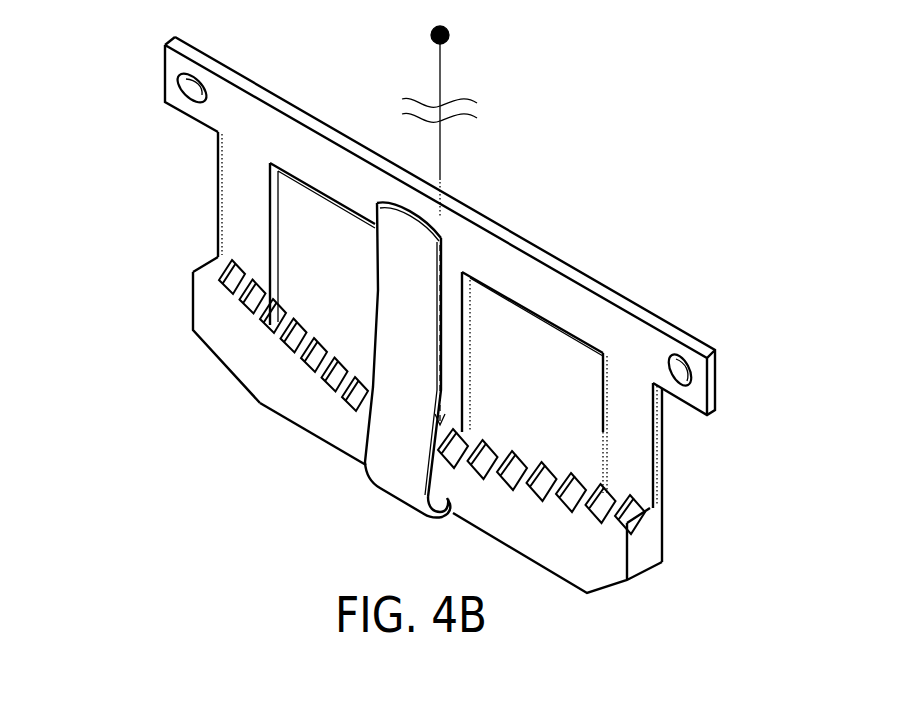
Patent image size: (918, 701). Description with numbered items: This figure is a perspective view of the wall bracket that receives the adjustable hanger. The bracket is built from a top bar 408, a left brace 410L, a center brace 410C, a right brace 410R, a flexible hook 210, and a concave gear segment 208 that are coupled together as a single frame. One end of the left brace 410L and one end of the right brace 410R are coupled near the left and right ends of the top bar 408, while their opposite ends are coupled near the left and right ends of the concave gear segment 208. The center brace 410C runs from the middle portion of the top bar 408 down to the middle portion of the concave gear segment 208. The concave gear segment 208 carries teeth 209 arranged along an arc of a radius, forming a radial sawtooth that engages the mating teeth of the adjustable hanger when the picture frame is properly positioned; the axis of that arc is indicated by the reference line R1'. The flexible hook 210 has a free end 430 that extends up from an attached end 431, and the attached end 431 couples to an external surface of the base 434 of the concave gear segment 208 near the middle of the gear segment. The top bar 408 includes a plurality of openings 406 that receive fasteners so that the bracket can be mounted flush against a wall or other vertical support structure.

The concave gear segment 208 is at (600, 588).
The teeth 209 is at (316, 347).
The flexible hook 210 is at (400, 478).
The openings 406 is at (178, 80).
The top bar 408 is at (558, 293).
The left brace 410L is at (235, 220).
The center brace 410C is at (470, 403).
The right brace 410R is at (658, 452).
The free end 430 is at (432, 222).
The attached end 431 is at (435, 520).
The base 434 is at (318, 417).
The rotation axis R1' is at (439, 121).